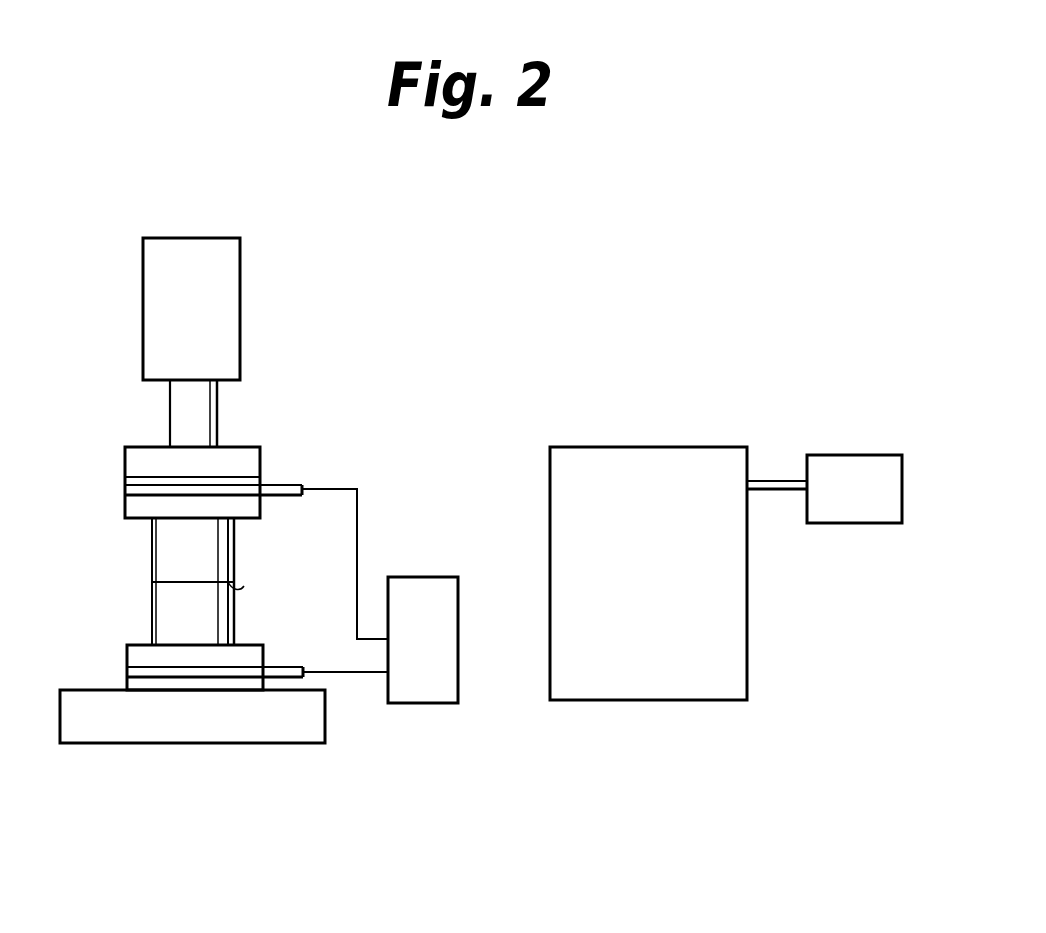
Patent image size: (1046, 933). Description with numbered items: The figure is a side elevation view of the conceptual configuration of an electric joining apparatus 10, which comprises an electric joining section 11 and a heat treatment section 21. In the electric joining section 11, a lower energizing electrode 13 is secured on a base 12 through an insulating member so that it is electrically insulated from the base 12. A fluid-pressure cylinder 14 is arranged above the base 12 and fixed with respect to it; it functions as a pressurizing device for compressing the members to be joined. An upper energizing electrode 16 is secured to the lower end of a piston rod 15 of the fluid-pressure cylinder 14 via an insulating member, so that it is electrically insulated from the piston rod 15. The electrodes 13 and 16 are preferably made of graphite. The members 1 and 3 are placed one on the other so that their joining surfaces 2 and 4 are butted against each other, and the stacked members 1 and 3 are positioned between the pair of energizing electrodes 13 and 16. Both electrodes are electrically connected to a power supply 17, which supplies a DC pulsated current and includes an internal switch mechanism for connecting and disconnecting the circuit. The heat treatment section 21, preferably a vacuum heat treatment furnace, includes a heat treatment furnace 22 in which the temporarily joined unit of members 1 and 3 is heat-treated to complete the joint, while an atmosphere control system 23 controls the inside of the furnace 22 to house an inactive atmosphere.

The member 1 is at (172, 620).
The joining surface 2 is at (172, 578).
The member 3 is at (172, 546).
The joining surface 4 is at (232, 588).
The electric joining apparatus 10 is at (490, 262).
The electric joining section 11 is at (288, 327).
The base 12 is at (137, 720).
The lower energizing electrode 13 is at (251, 649).
The fluid-pressure cylinder 14 is at (133, 303).
The piston rod 15 is at (185, 415).
The upper energizing electrode 16 is at (140, 507).
The power supply 17 is at (420, 595).
The heat treatment section 21 is at (716, 386).
The heat treatment furnace 22 is at (616, 435).
The atmosphere control system 23 is at (852, 444).